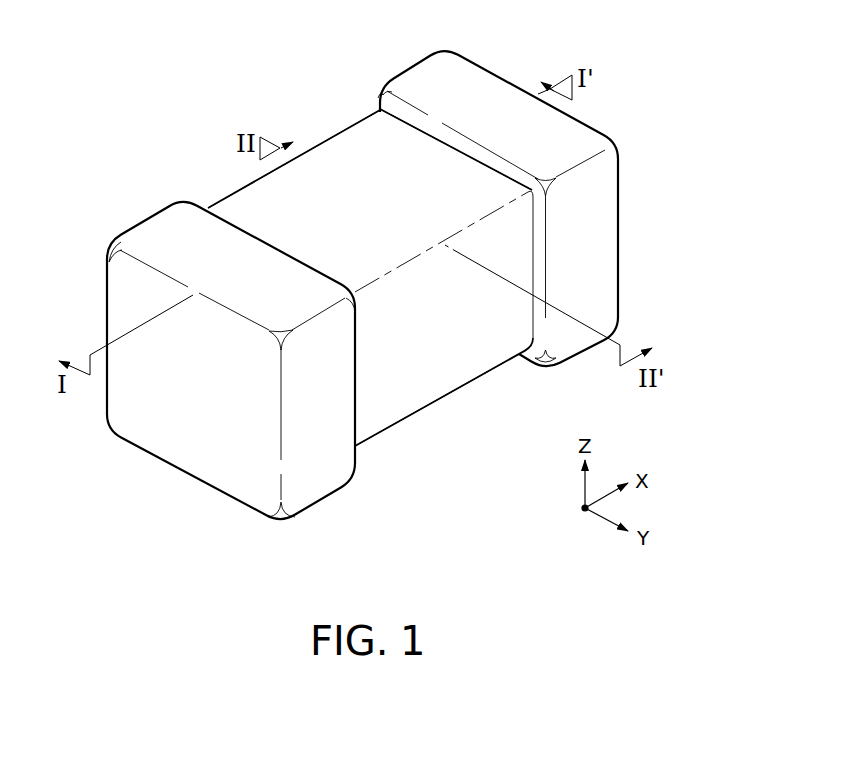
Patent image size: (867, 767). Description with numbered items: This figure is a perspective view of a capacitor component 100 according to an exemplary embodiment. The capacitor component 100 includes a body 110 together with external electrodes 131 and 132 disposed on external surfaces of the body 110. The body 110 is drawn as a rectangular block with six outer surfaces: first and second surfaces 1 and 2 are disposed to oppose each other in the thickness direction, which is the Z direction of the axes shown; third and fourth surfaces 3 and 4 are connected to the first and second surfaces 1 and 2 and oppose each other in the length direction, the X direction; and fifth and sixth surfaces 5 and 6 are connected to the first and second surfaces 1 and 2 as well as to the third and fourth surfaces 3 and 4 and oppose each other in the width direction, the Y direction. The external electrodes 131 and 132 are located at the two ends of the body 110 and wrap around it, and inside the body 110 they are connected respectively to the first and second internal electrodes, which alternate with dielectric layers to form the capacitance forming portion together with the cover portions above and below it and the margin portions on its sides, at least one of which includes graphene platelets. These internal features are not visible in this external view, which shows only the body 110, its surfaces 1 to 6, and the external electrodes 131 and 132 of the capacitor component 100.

The capacitor component 100 is at (165, 60).
The body 110 is at (242, 208).
The external electrode 131 is at (164, 232).
The external electrode 132 is at (420, 88).
The first surface 1 is at (403, 369).
The second surface 2 is at (390, 167).
The third surface 3 is at (197, 420).
The fourth surface 4 is at (570, 223).
The fifth surface 5 is at (461, 342).
The sixth surface 6 is at (330, 188).